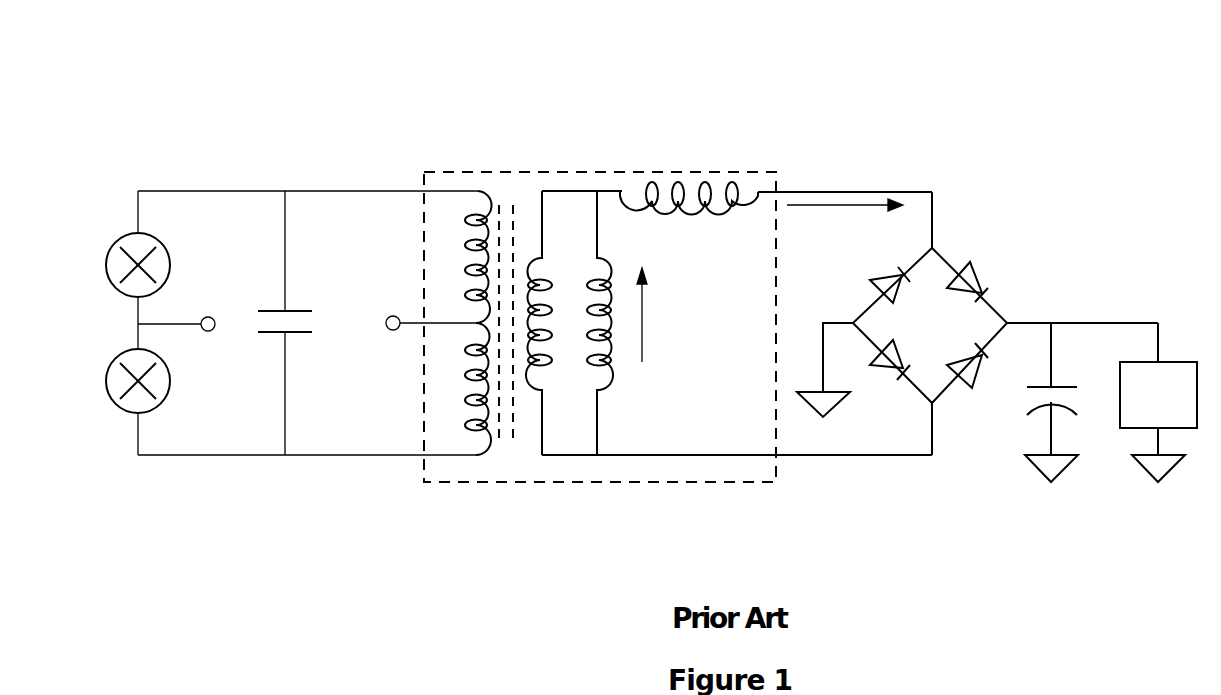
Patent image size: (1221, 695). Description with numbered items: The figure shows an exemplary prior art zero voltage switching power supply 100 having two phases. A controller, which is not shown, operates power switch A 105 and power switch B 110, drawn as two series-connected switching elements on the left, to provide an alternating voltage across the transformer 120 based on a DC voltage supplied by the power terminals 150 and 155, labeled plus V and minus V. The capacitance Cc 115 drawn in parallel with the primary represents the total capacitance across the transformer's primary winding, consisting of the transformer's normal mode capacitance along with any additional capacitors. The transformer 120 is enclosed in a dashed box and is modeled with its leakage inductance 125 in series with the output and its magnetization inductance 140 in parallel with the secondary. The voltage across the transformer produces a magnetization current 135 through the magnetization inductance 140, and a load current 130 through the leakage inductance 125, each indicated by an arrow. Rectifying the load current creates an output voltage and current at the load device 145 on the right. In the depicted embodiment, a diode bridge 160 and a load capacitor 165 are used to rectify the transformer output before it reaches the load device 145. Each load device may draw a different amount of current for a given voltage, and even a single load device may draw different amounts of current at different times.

The zero voltage switching power supply 100 is at (687, 33).
The power switch A 105 is at (79, 209).
The power switch B 110 is at (75, 333).
The capacitance Cc 115 is at (264, 297).
The transformer 120 is at (533, 165).
The leakage inductance 125 is at (715, 183).
The load current 130 is at (852, 202).
The magnetization current 135 is at (687, 315).
The magnetization inductance 140 is at (673, 420).
The load device 145 is at (1178, 409).
The power terminal 150 is at (378, 278).
The power terminal 155 is at (211, 367).
The diode bridge 160 is at (998, 252).
The load capacitor 165 is at (1003, 418).